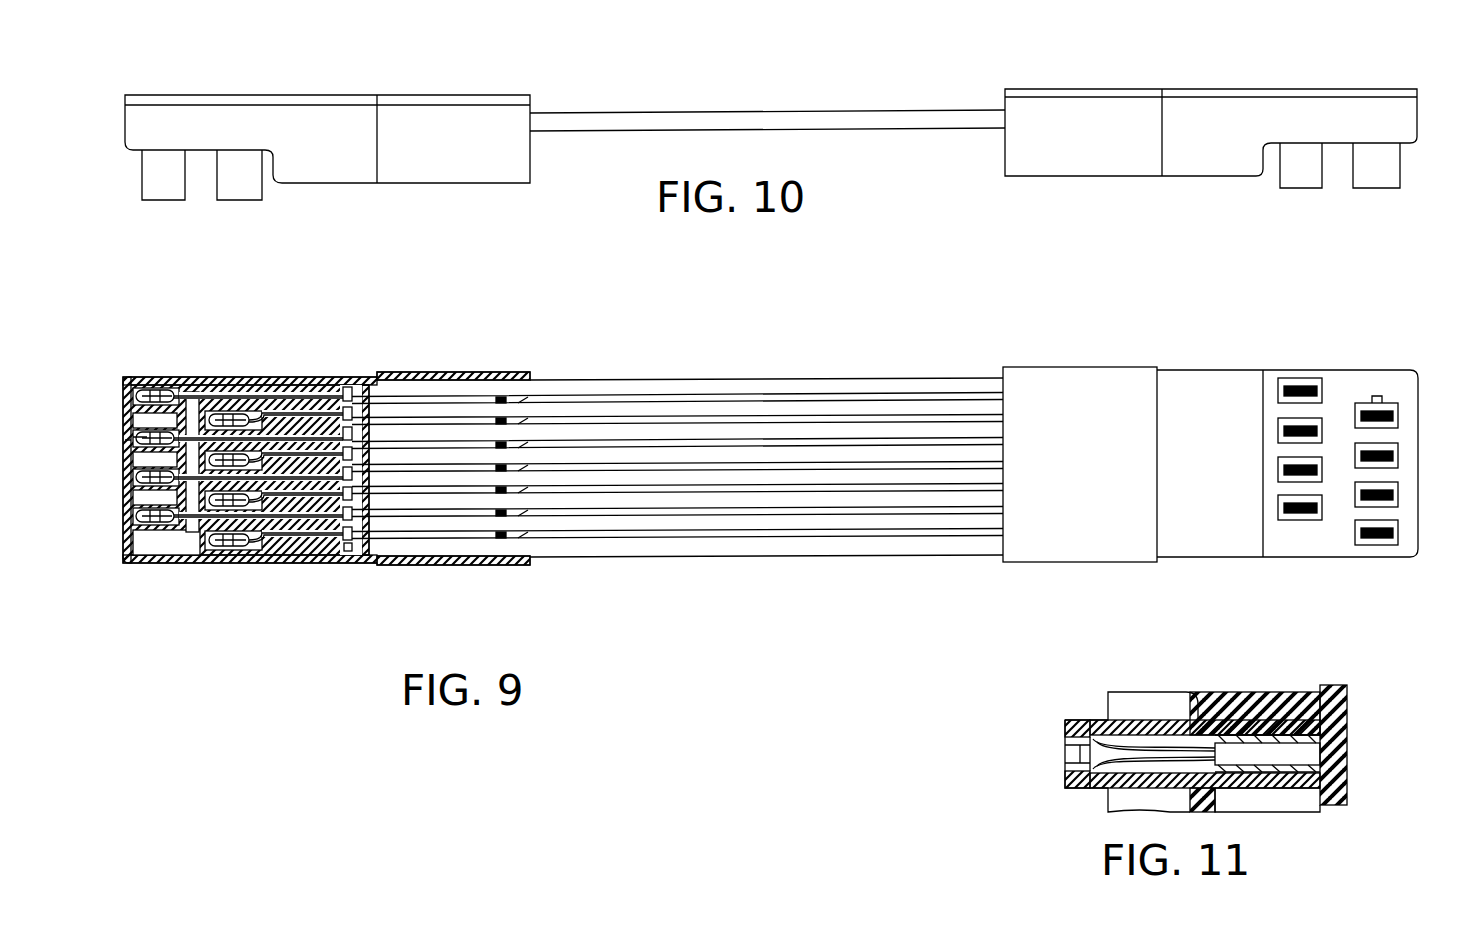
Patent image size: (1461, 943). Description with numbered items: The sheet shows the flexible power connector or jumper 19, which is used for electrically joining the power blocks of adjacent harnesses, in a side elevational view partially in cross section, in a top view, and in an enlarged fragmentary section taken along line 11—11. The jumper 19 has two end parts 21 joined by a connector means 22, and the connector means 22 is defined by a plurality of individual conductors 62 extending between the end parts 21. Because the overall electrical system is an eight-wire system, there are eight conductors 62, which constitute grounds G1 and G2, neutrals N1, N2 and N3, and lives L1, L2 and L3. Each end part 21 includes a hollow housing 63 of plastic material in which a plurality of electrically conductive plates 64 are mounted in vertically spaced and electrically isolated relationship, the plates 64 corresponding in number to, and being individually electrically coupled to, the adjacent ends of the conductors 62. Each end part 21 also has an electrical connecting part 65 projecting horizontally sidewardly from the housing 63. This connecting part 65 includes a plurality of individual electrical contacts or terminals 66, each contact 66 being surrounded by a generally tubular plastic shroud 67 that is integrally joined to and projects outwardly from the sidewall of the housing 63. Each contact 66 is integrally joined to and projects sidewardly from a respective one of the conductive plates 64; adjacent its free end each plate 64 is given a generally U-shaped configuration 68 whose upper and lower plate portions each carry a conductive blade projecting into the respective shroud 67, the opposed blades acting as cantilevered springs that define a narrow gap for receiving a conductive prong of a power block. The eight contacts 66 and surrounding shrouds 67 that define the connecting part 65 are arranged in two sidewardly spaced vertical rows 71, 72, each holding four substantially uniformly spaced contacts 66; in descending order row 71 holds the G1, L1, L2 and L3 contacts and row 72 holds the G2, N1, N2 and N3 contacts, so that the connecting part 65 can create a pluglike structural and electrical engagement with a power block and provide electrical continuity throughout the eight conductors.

In FIG. 10, the flexible power connector or jumper 19 is at (834, 80).
In FIG. 9, the flexible power connector or jumper 19 is at (812, 336).
In FIG. 10, the end part 21 is at (458, 86).
In FIG. 9, the end part 21 is at (1084, 362).
In FIG. 10, the connector means 22 is at (738, 106).
In FIG. 9, the connector means 22 is at (677, 459).
In FIG. 10, the conductors 62 is at (885, 121).
In FIG. 9, the conductors 62 is at (628, 457).
In FIG. 10, the hollow housing 63 is at (470, 165).
In FIG. 9, the hollow housing 63 is at (355, 562).
In FIG. 9, the electrically conductive plates 64 is at (206, 430).
In FIG. 10, the electrical connecting part 65 is at (209, 208).
In FIG. 9, the electrical connecting part 65 is at (1348, 392).
In FIG. 9, the electrical contacts or terminals 66 is at (150, 388).
In FIG. 10, the tubular plastic shroud 67 is at (165, 188).
In FIG. 9, the tubular plastic shroud 67 is at (1400, 416).
In FIG. 9, the U-shaped configuration 68 is at (132, 441).
In FIG. 9, the row 71 is at (1319, 358).
In FIG. 9, the row 72 is at (1382, 370).
In FIG. 9, the section line 11— 11 is at (1240, 412).
In FIG. 9, the ground conductor/contact G1 is at (860, 385).
In FIG. 9, the ground conductor/contact G2 is at (898, 400).
In FIG. 9, the live conductor/contact L1 is at (942, 425).
In FIG. 9, the neutral conductor/contact N1 is at (977, 447).
In FIG. 9, the live conductor/contact L2 is at (572, 480).
In FIG. 9, the neutral conductor/contact N2 is at (592, 502).
In FIG. 9, the live conductor/contact L3 is at (603, 525).
In FIG. 9, the neutral conductor/contact N3 is at (625, 545).